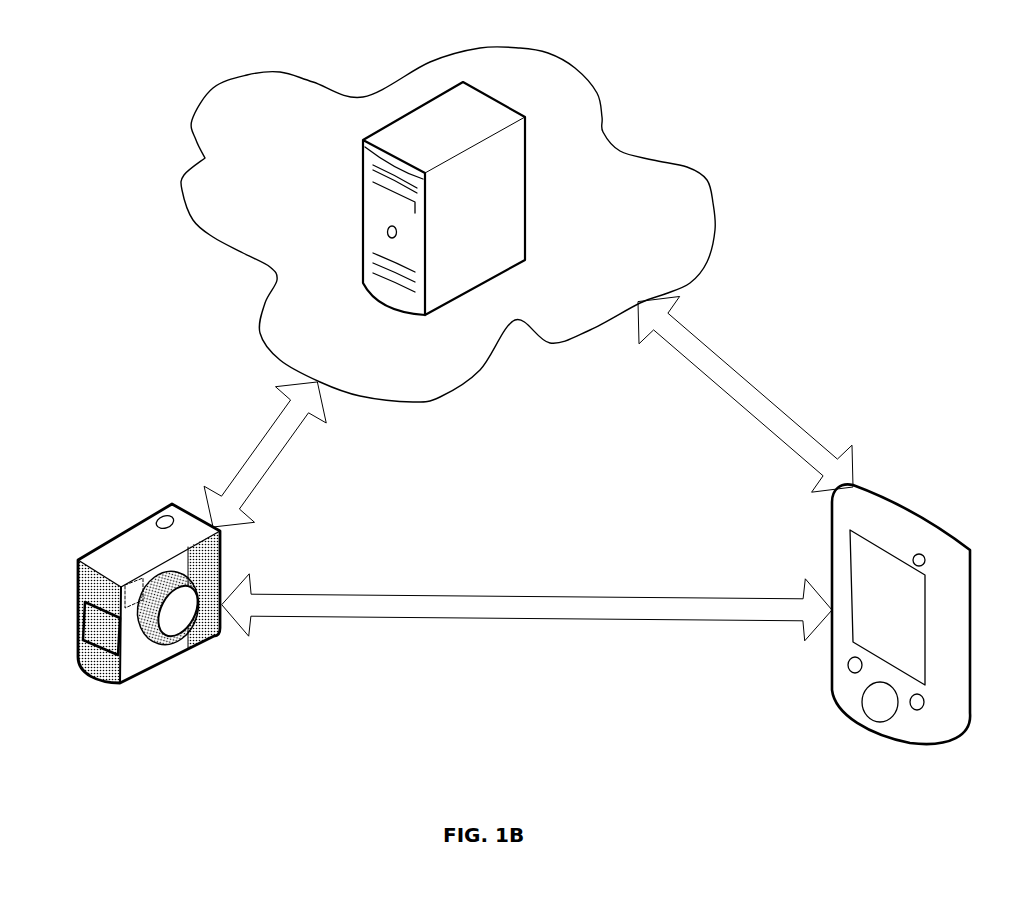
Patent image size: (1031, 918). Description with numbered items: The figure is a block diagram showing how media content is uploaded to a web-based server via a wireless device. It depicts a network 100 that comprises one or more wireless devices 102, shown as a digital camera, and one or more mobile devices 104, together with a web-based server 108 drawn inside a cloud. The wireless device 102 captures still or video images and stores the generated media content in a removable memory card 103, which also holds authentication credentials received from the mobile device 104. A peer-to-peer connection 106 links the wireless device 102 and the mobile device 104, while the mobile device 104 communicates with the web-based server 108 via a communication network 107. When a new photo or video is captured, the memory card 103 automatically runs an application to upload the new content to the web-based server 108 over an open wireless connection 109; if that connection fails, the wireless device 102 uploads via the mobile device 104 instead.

The network 100 is at (847, 253).
The wireless device 102 is at (138, 527).
The memory card 103 is at (78, 617).
The mobile device 104 is at (952, 532).
The peer-to-peer connection 106 is at (405, 617).
The communication network 107 is at (788, 417).
The web-based server 108 is at (527, 243).
The open wireless connection 109 is at (247, 463).